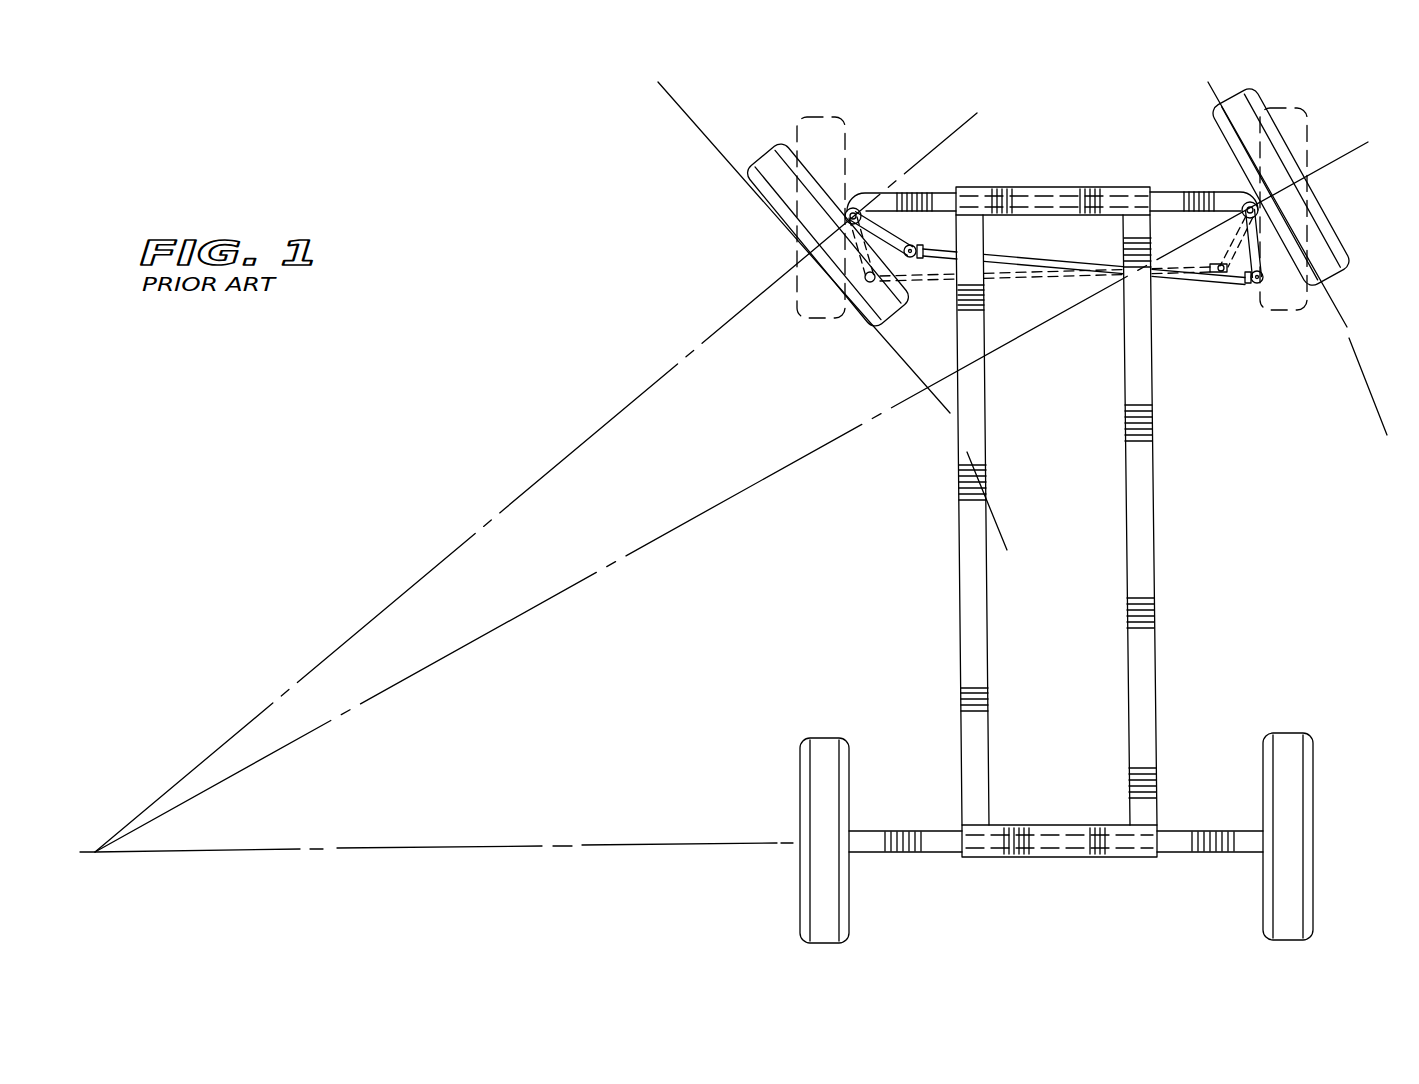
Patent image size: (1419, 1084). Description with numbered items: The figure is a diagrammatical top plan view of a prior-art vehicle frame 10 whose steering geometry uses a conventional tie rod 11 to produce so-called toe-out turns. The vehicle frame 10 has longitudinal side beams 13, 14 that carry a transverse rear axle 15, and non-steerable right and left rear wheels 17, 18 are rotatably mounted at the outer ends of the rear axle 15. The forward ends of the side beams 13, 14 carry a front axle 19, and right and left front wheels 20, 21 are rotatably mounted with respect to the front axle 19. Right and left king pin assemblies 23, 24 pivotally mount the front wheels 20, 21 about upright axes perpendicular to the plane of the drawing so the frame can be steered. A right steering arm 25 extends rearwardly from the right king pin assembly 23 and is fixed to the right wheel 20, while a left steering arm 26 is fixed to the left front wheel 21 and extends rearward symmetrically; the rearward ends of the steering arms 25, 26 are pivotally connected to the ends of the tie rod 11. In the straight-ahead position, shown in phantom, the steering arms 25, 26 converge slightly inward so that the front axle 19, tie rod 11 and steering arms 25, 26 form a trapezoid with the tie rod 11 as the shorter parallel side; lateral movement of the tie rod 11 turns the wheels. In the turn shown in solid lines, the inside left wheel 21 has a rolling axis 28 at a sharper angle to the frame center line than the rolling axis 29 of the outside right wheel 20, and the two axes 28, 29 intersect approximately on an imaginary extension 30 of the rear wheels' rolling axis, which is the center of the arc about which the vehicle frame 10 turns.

The vehicle frame 10 is at (1158, 568).
The tie rod 11 is at (1042, 272).
The longitudinal side beam 13 is at (1155, 501).
The longitudinal side beam 14 is at (958, 560).
The rear axle 15 is at (1240, 855).
The right rear wheel 17 is at (1312, 772).
The left rear wheel 18 is at (800, 918).
The front axle 19 is at (933, 193).
The right front wheel 20 is at (1232, 110).
The left front wheel 21 is at (766, 199).
The right king pin assembly 23 is at (1242, 211).
The left king pin assembly 24 is at (850, 207).
The right steering arm 25 is at (1226, 256).
The left steering arm 26 is at (888, 239).
The rolling axis 28 is at (480, 528).
The rolling axis 29 is at (500, 628).
The imaginary extension of the rolling axis of the rear wheels 30 is at (493, 848).